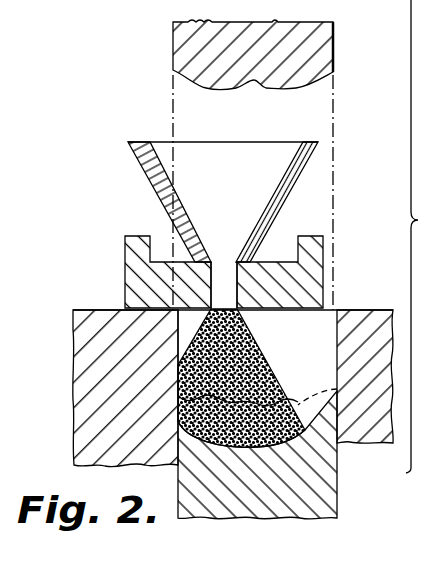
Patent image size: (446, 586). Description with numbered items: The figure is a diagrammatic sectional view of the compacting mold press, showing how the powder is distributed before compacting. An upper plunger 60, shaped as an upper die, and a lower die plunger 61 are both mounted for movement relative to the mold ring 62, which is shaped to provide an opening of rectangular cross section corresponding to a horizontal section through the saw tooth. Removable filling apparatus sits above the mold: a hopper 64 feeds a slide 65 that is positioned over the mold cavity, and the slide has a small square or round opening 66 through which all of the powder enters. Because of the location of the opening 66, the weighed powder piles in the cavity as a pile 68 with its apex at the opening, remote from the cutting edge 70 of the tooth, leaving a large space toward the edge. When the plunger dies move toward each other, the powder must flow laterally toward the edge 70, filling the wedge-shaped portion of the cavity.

The upper plunger 60 is at (196, 36).
The lower die plunger 61 is at (255, 508).
The mold ring 62 is at (82, 372).
The hopper 64 is at (223, 202).
The slide 65 is at (125, 266).
The opening 66 is at (226, 278).
The pile 68 is at (253, 342).
The cutting edge 70 is at (335, 389).